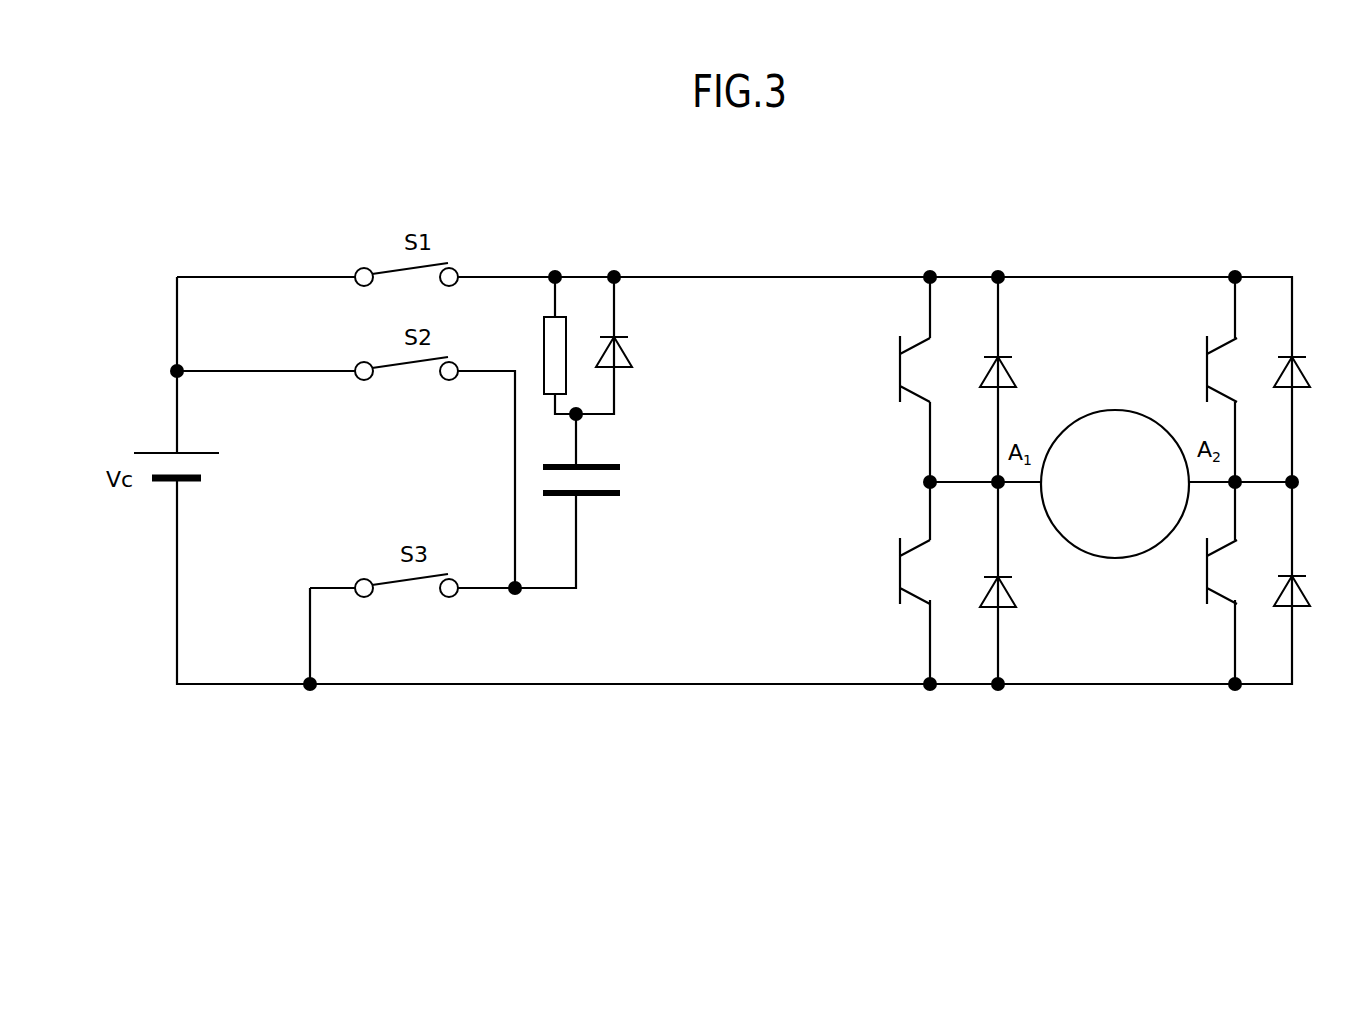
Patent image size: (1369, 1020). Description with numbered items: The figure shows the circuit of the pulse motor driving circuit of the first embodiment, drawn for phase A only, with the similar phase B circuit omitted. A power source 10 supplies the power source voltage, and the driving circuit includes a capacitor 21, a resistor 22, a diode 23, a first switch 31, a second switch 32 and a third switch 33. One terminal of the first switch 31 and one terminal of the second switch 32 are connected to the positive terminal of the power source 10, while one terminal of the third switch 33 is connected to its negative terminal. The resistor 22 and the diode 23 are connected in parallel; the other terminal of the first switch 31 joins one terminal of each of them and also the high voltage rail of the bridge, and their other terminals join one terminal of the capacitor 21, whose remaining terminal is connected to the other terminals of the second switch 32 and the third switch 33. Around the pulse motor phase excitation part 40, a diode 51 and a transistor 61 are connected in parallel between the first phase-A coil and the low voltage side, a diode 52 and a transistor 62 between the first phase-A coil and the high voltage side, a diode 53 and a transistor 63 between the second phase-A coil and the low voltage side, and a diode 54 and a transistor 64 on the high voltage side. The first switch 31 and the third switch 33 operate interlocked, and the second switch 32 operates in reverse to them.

The power source 10 is at (145, 453).
The capacitor 21 is at (612, 497).
The resistor 22 is at (543, 337).
The diode 23 is at (627, 362).
The first switch (S1) 31 is at (380, 272).
The second switch (S2) 32 is at (380, 366).
The third switch (S3) 33 is at (380, 583).
The pulse motor phase excitation part 40 is at (1112, 411).
The diode 51 is at (1007, 612).
The diode 52 is at (1013, 378).
The diode 53 is at (1272, 608).
The diode 54 is at (1307, 378).
The transistor 61 is at (924, 596).
The transistor 62 is at (920, 342).
The transistor 63 is at (1225, 615).
The transistor 64 is at (1222, 342).